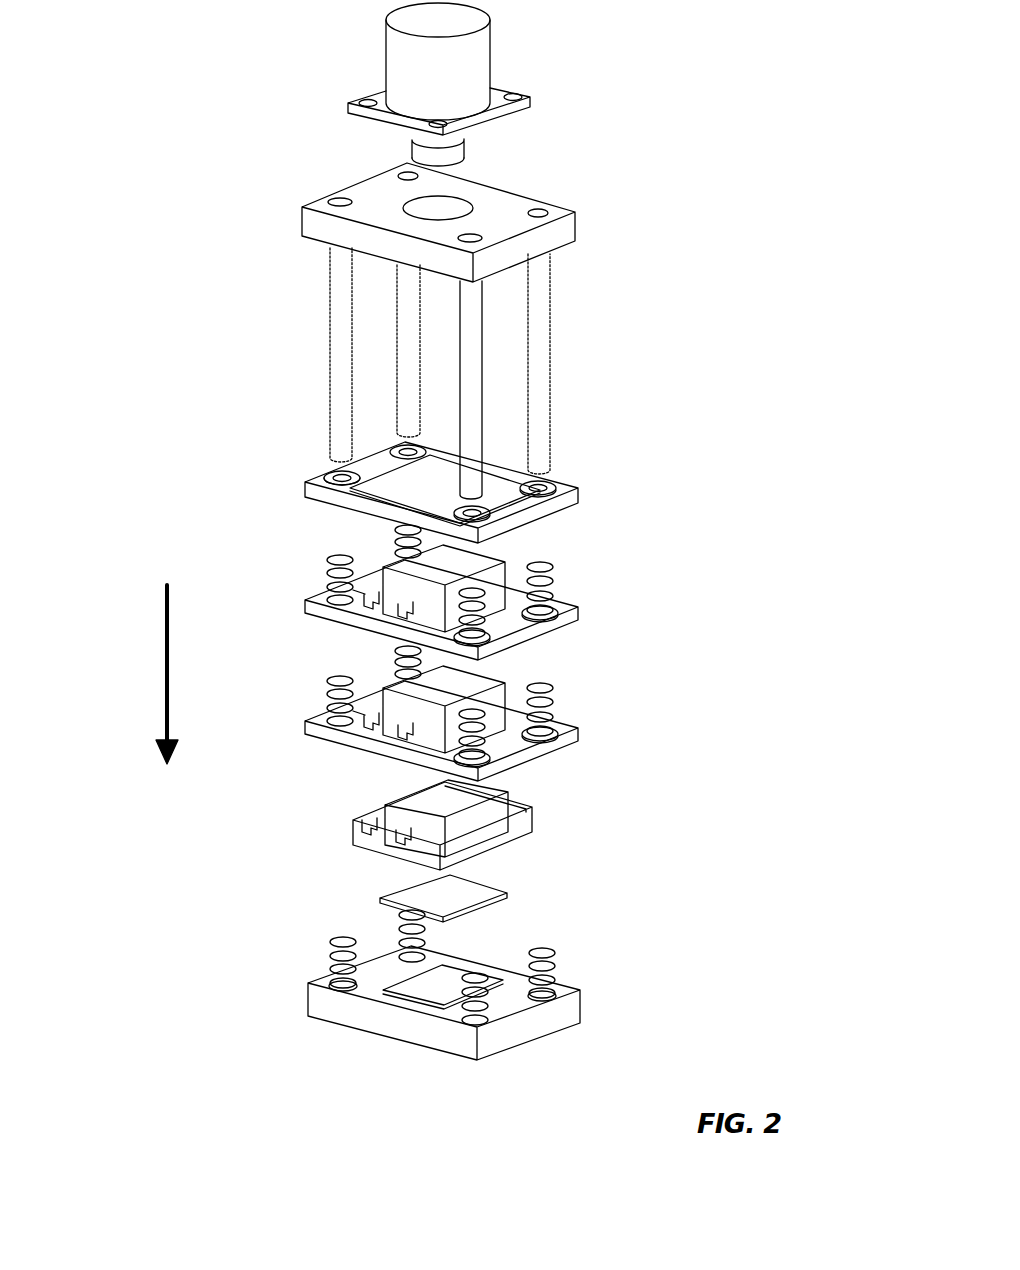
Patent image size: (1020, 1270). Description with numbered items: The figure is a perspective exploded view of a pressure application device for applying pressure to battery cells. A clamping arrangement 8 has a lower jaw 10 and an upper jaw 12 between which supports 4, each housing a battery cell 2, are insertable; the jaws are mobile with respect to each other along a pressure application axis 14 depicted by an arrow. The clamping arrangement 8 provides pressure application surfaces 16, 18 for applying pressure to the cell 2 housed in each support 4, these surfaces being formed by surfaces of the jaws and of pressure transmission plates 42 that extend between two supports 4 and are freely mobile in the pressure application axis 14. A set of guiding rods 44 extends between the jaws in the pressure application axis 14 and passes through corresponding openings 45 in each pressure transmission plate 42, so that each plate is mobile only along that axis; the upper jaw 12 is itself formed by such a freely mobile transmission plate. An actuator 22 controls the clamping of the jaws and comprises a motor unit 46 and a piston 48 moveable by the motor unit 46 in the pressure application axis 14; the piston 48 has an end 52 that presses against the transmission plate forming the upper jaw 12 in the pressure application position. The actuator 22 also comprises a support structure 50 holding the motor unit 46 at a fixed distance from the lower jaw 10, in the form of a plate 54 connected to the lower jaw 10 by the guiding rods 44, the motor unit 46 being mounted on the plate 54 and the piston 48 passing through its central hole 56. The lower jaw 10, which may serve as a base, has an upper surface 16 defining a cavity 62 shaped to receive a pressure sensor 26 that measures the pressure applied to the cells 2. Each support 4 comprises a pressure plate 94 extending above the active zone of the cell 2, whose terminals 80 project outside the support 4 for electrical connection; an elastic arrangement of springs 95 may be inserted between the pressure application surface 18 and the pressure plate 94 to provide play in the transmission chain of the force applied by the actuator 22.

The clamping arrangement 8 is at (172, 290).
The actuator 22 is at (572, 76).
The motor unit 46 is at (481, 56).
The piston 48 is at (458, 147).
The end 52 is at (453, 162).
The support structure 50 is at (280, 207).
The plate 54 is at (567, 230).
The central hole 56 is at (418, 202).
The guiding rods 44 is at (398, 322).
The upper jaw 12 is at (590, 478).
The pressure application surfaces 18 is at (560, 518).
The pressure plate 94 is at (405, 564).
The springs 95 is at (458, 553).
The openings 45 is at (545, 598).
The pressure application surfaces 16 is at (572, 606).
The pressure application axis 14 is at (165, 672).
The pressure transmission plates 42 is at (310, 725).
The battery cell 2 is at (378, 815).
The support 4 is at (507, 724).
The terminals 80 is at (405, 848).
The pressure sensor 26 is at (482, 907).
The cavity 62 is at (410, 990).
The lower jaw 10 is at (577, 1038).